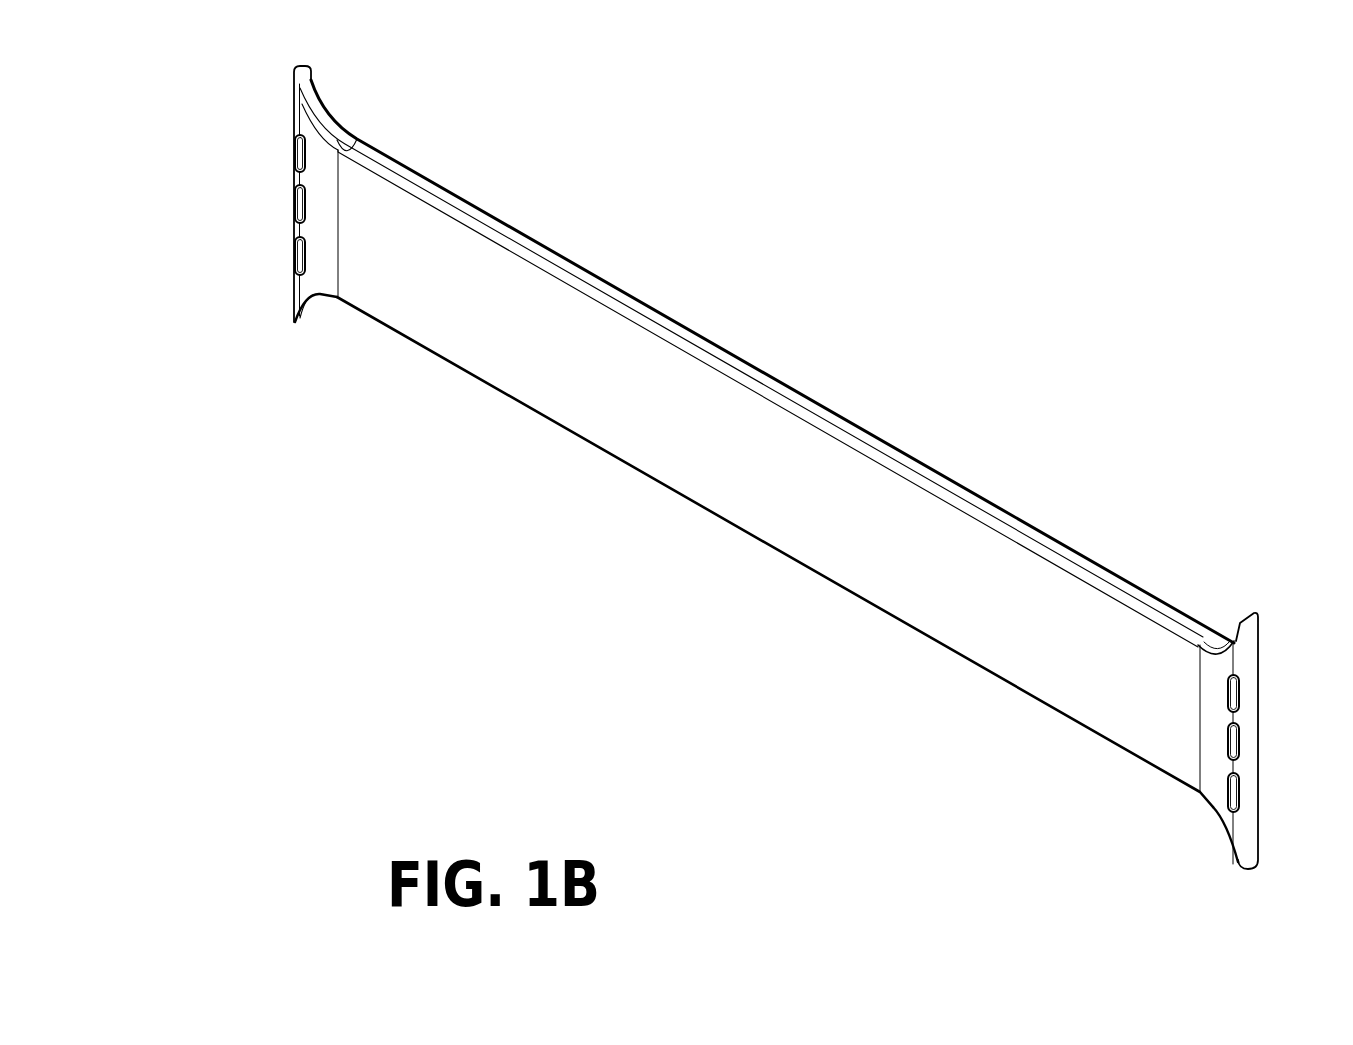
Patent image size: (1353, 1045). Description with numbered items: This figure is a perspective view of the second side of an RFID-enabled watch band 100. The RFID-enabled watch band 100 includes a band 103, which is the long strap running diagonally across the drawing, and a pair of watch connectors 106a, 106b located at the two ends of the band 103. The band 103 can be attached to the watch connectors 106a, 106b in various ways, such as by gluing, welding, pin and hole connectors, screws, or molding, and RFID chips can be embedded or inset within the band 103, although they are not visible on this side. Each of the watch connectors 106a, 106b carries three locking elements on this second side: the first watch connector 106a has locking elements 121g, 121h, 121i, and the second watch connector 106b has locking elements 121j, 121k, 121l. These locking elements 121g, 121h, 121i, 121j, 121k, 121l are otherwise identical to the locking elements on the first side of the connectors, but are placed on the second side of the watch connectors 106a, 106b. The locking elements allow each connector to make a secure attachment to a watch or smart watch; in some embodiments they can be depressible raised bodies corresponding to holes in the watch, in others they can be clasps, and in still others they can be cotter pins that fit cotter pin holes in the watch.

The RFID-enabled watch band 100 is at (579, 504).
The band 103 is at (672, 320).
The watch connector 106a is at (308, 312).
The watch connector 106b is at (1213, 807).
The locking element 121g is at (296, 153).
The locking element 121h is at (296, 204).
The locking element 121i is at (296, 255).
The locking element 121j is at (1238, 698).
The locking element 121k is at (1238, 744).
The locking element 121l is at (1238, 790).